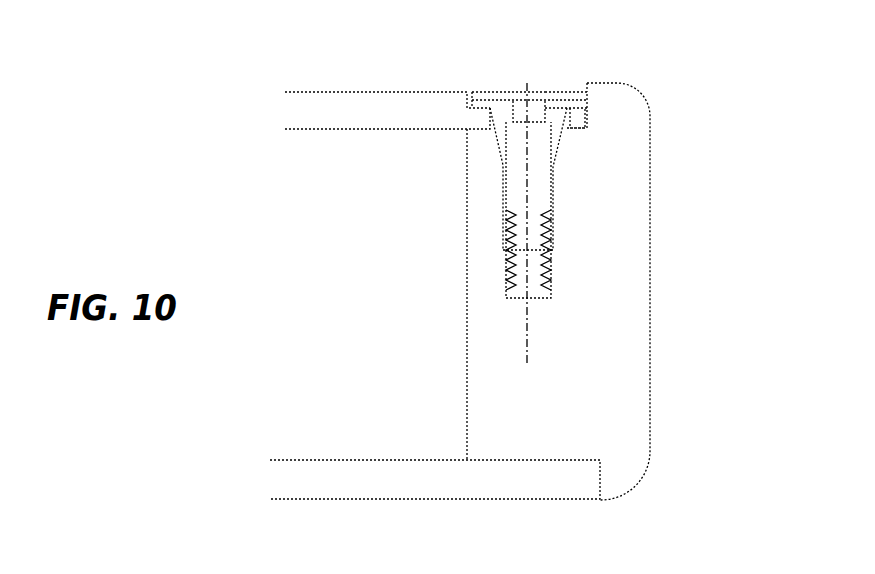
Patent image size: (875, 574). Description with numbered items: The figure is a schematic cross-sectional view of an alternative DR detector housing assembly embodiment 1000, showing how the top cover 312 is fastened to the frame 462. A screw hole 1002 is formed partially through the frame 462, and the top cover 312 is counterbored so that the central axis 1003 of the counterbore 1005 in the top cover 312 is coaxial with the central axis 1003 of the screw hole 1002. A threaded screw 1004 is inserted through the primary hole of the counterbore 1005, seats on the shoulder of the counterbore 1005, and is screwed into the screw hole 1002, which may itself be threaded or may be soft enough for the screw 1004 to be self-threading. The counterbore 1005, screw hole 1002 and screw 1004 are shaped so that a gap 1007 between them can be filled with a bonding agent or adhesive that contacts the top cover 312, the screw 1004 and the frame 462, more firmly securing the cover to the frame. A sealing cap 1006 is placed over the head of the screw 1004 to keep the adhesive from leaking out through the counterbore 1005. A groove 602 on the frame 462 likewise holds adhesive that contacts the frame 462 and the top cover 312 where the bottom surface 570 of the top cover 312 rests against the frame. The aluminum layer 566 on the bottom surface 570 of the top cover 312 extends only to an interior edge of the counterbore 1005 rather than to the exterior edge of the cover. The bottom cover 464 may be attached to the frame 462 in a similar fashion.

The top cover 312 is at (307, 104).
The aluminum layer 566 is at (367, 131).
The bottom surface 570 is at (415, 130).
The counterbore 1005 is at (471, 91).
The sealing cap 1006 is at (545, 92).
The groove 602 is at (560, 148).
The gap 1007 is at (497, 125).
The threaded screw 1004 is at (543, 167).
The screw hole 1002 is at (553, 297).
The central axis 1003 is at (527, 345).
The frame 462 is at (625, 297).
The bottom cover 464 is at (285, 480).
The assembly embodiment 1000 is at (792, 285).